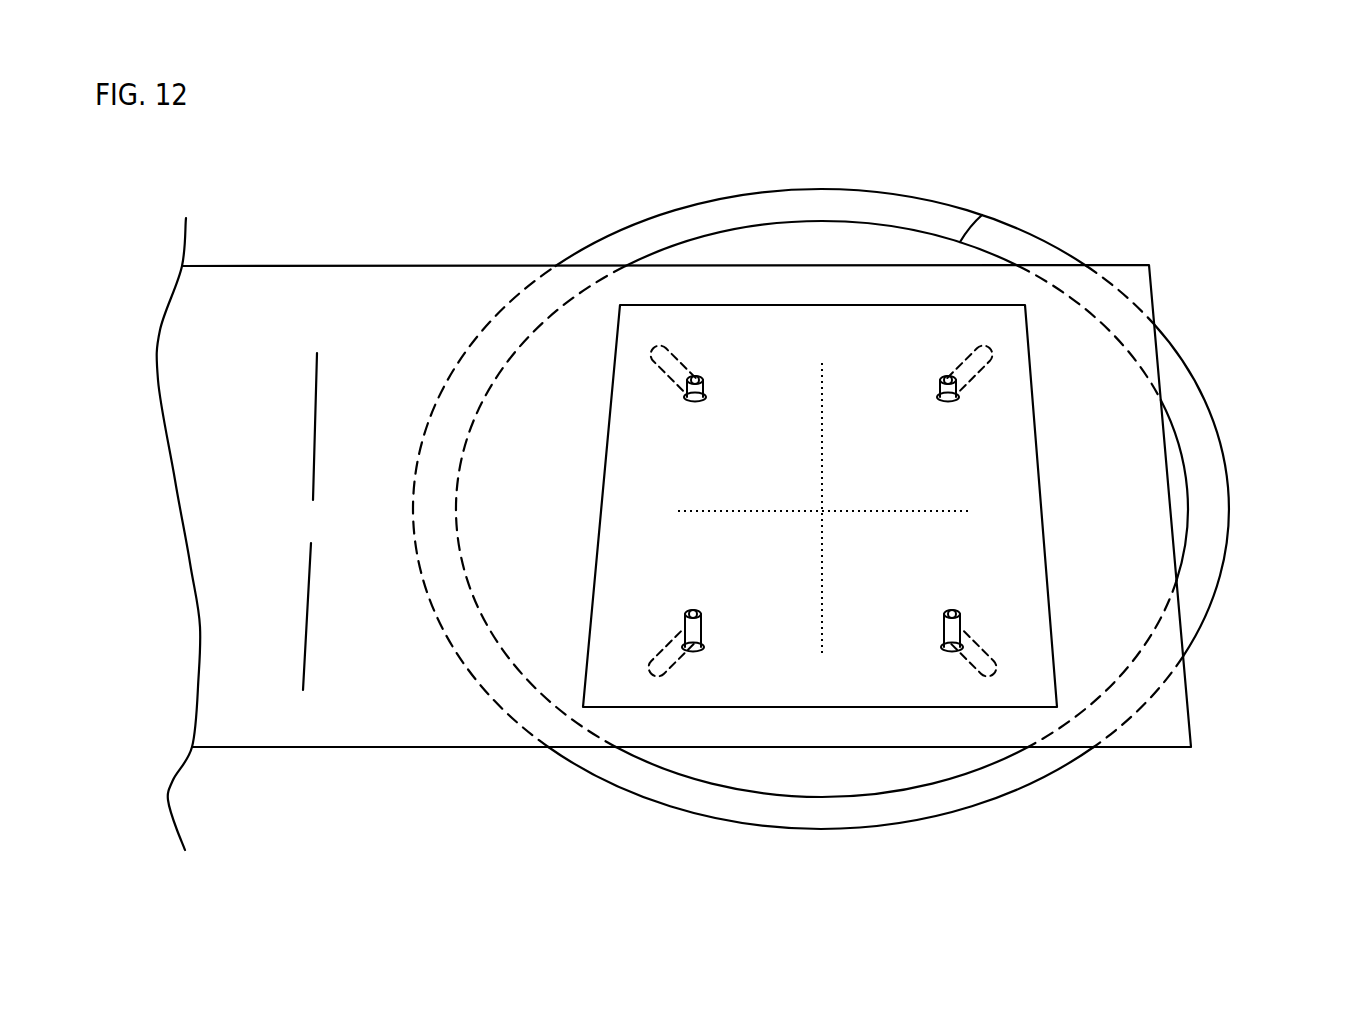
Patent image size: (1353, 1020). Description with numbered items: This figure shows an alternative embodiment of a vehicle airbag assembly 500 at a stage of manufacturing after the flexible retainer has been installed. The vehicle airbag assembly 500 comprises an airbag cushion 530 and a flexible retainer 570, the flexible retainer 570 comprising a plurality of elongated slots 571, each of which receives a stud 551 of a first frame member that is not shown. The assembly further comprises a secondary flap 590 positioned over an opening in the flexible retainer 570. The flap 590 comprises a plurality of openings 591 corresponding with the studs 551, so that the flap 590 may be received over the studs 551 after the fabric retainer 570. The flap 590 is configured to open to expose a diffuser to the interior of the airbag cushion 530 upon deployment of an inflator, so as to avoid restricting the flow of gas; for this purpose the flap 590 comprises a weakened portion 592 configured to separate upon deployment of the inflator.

The vehicle airbag assembly 500 is at (992, 145).
The airbag cushion 530 is at (912, 763).
The stud 551 is at (703, 640).
The flexible retainer 570 is at (370, 710).
The elongated slot 571 is at (678, 360).
The secondary flap 590 is at (910, 335).
The opening 591 is at (977, 650).
The weakened portion 592 is at (893, 507).